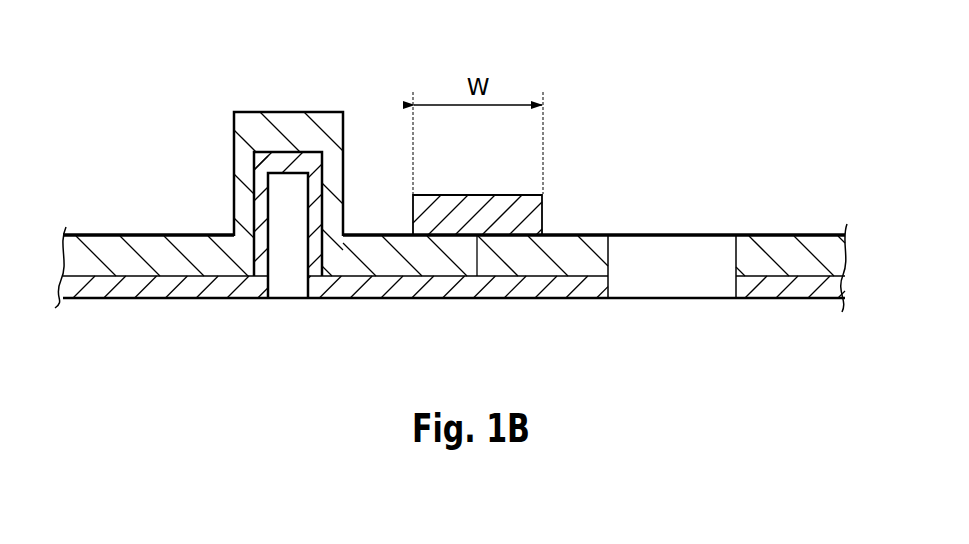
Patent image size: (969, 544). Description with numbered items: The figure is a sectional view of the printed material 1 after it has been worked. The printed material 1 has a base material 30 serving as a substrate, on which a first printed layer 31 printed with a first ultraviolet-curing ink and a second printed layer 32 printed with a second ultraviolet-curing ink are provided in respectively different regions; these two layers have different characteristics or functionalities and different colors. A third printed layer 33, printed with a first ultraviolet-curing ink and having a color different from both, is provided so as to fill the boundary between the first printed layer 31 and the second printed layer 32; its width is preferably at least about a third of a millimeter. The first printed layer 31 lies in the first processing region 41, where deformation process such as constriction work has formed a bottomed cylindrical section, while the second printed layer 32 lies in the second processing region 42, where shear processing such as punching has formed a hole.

The printed material 1 is at (717, 122).
The base material 30 is at (460, 288).
The first printed layer 31 is at (380, 253).
The second printed layer 32 is at (792, 258).
The third printed layer 33 is at (471, 217).
The first processing region 41 is at (291, 104).
The second processing region 42 is at (672, 231).